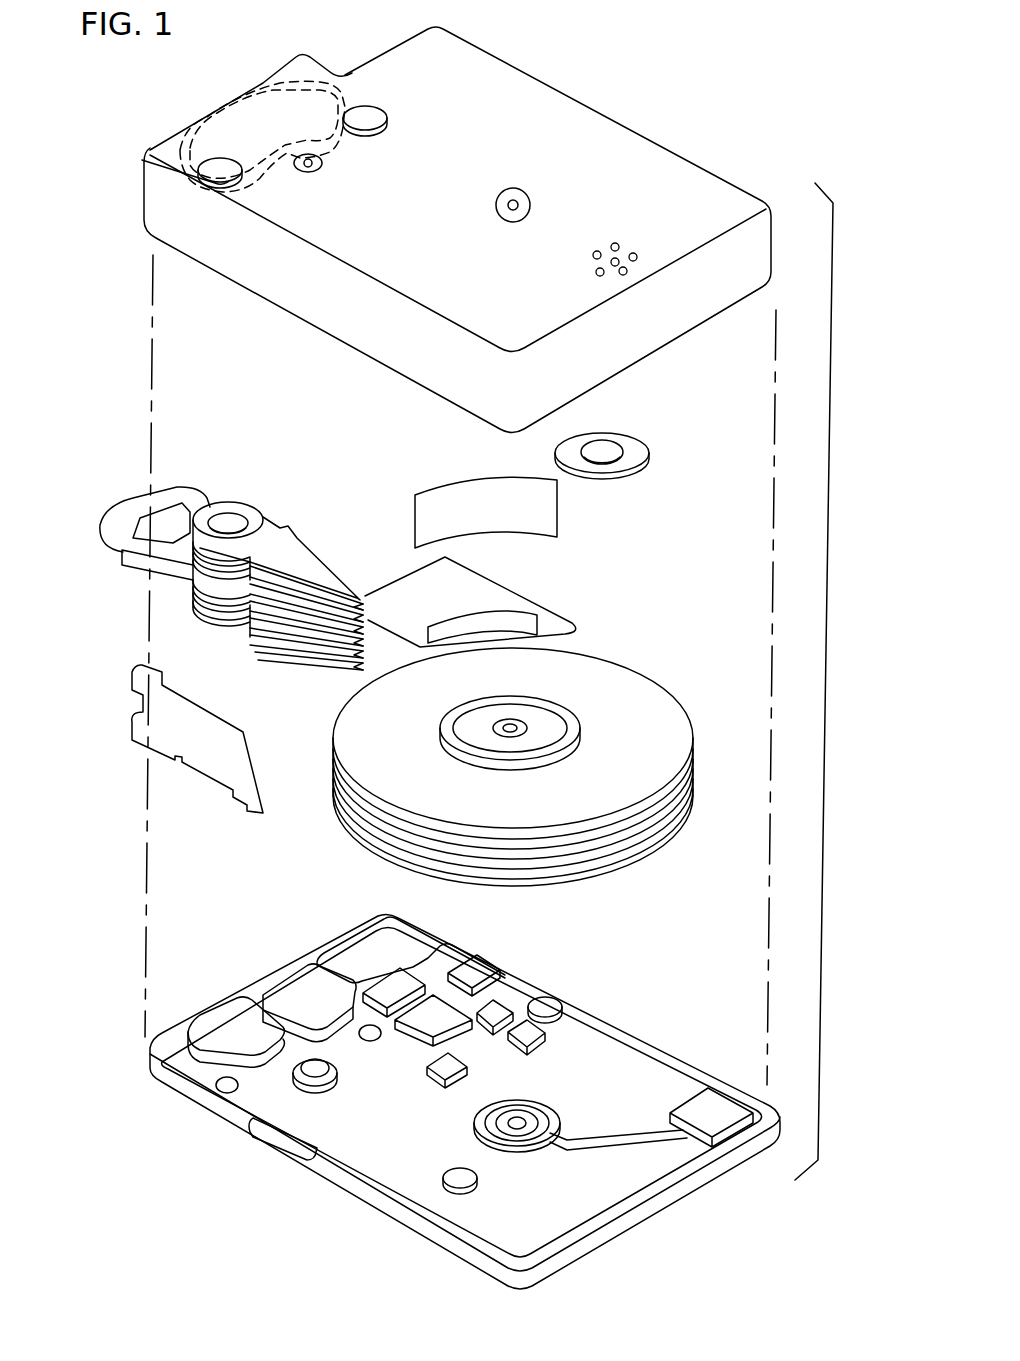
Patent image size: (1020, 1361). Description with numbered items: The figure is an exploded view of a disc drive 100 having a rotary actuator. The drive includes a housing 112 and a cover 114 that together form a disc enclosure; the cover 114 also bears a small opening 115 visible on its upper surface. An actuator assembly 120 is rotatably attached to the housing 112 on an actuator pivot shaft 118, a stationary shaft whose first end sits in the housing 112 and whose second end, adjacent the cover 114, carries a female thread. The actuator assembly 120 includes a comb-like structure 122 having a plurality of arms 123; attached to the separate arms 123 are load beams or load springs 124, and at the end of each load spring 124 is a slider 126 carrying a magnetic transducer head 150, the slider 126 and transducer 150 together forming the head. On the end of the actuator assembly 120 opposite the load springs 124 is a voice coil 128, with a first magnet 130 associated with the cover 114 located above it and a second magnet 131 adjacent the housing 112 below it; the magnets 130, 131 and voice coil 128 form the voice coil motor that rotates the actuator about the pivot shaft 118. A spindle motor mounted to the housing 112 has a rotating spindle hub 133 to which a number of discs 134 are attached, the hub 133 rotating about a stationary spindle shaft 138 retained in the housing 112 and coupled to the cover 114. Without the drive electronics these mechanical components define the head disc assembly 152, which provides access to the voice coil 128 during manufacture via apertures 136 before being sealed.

The disc drive 100 is at (125, 430).
The housing 112 is at (652, 1077).
The cover 114 is at (642, 163).
The hole in cover 115 is at (530, 193).
The actuator pivot shaft 118 is at (237, 510).
The actuator assembly 120 is at (160, 577).
The comb-like structure 122 is at (260, 637).
The arms 123 is at (297, 537).
The load springs 124 is at (307, 567).
The slider 126 is at (360, 597).
The voice coil 128 is at (127, 527).
The first magnet 130 is at (263, 80).
The second magnet 131 is at (218, 1027).
The spindle hub 133 is at (525, 710).
The discs 134 is at (655, 700).
The apertures 136 is at (377, 106).
The spindle shaft 138 is at (493, 737).
The magnetic transducer head 150 is at (370, 603).
The head disc assembly 152 is at (840, 513).